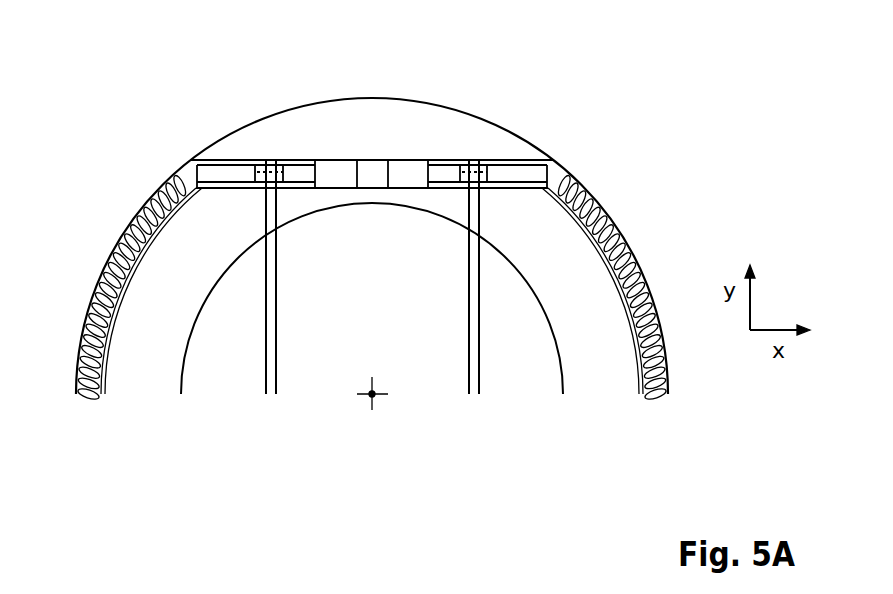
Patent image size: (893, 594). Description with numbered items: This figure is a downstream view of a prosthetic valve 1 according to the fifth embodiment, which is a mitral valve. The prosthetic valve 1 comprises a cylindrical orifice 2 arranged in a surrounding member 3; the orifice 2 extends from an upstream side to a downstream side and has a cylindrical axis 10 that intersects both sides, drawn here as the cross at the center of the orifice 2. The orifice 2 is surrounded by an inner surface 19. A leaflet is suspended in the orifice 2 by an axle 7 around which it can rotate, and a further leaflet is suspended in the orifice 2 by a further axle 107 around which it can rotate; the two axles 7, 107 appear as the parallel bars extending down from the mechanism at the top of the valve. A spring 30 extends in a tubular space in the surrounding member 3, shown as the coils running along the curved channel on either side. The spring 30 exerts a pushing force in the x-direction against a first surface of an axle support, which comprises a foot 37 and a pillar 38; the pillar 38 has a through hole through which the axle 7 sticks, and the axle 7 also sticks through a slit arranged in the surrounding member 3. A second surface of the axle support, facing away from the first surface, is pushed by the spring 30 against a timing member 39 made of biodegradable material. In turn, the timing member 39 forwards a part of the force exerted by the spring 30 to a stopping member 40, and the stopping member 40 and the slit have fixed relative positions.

The prosthetic valve 1 is at (612, 174).
The orifice 2 is at (505, 375).
The surrounding member 3 is at (595, 363).
The axle 7 is at (268, 340).
The cylindrical axis 10 is at (368, 396).
The inner surface 19 is at (546, 327).
The spring 30 is at (116, 305).
The foot 37 is at (220, 175).
The pillar 38 is at (256, 175).
The timing member 39 is at (333, 175).
The stopping member 40 is at (377, 175).
The further axle 107 is at (472, 282).